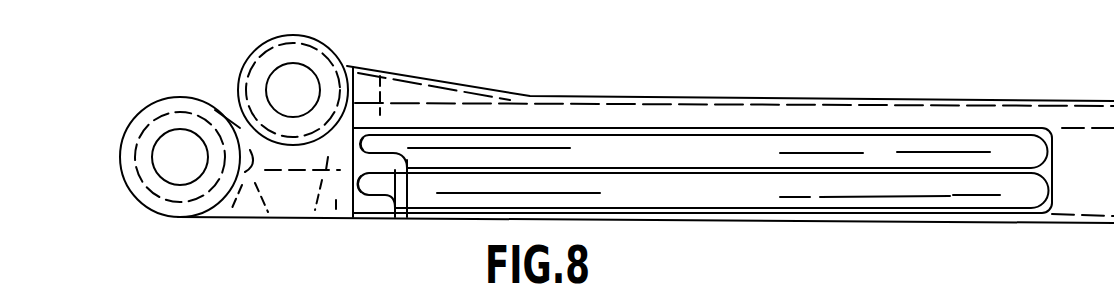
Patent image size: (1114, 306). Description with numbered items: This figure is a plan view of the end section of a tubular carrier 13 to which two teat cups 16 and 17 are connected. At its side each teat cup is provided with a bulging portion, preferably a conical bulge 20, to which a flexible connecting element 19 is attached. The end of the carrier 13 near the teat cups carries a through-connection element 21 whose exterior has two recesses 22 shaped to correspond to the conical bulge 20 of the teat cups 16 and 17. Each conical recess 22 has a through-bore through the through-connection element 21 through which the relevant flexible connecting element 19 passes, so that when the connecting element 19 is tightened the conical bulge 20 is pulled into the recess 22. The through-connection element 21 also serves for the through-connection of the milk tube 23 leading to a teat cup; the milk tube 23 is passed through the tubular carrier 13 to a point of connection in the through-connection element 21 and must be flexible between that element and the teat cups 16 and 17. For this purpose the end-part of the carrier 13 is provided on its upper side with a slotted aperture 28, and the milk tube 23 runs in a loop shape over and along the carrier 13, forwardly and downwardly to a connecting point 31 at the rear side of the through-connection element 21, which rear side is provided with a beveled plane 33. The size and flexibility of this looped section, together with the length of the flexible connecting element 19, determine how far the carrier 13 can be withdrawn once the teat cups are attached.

The carrier 13 is at (1097, 68).
The teat cup 16 is at (159, 99).
The teat cup 17 is at (243, 55).
The flexible connecting element 19 is at (315, 218).
The conical bulge 20 is at (270, 218).
The through-connection element 21 is at (338, 218).
The recess 22 is at (232, 208).
The milk tube 23 is at (891, 153).
The slotted aperture 28 is at (1048, 170).
The connecting point 31 is at (384, 210).
The beveled plane 33 is at (366, 218).